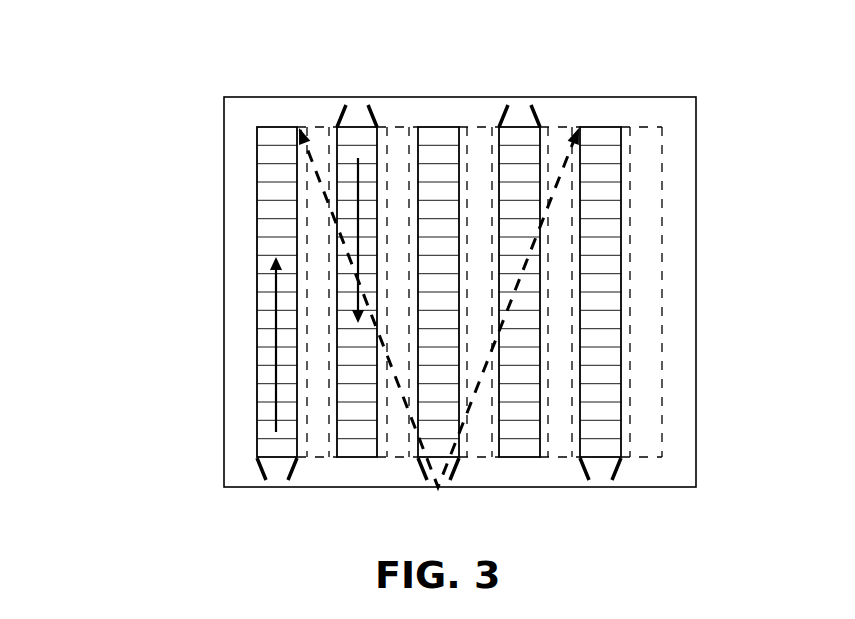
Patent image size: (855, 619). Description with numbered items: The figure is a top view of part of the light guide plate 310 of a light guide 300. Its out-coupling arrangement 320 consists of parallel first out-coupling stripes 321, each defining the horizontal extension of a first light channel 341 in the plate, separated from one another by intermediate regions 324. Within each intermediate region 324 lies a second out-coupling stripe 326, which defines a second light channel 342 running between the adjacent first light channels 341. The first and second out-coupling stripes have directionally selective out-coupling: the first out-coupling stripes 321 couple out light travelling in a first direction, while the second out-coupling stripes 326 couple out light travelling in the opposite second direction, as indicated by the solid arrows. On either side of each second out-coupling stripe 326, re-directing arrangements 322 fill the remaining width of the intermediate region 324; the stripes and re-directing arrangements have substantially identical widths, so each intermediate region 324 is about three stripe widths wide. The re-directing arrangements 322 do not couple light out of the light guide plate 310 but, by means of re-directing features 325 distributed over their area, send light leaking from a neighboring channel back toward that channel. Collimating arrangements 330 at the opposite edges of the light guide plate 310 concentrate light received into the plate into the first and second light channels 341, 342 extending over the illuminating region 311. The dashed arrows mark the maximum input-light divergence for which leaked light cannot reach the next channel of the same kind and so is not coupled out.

The light guide 300 is at (165, 100).
The light guide plate 310 is at (697, 170).
The illuminating region 311 is at (663, 305).
The out-coupling arrangement 320 is at (453, 120).
The first out-coupling stripe 321 is at (364, 277).
The re-directing arrangement 322 is at (277, 143).
The intermediate region 324 is at (316, 122).
The re-directing feature 325 is at (300, 168).
The second out-coupling stripe 326 is at (357, 157).
The collimating arrangement 330 is at (622, 472).
The first light channel 341 is at (380, 272).
The second light channel 342 is at (388, 153).